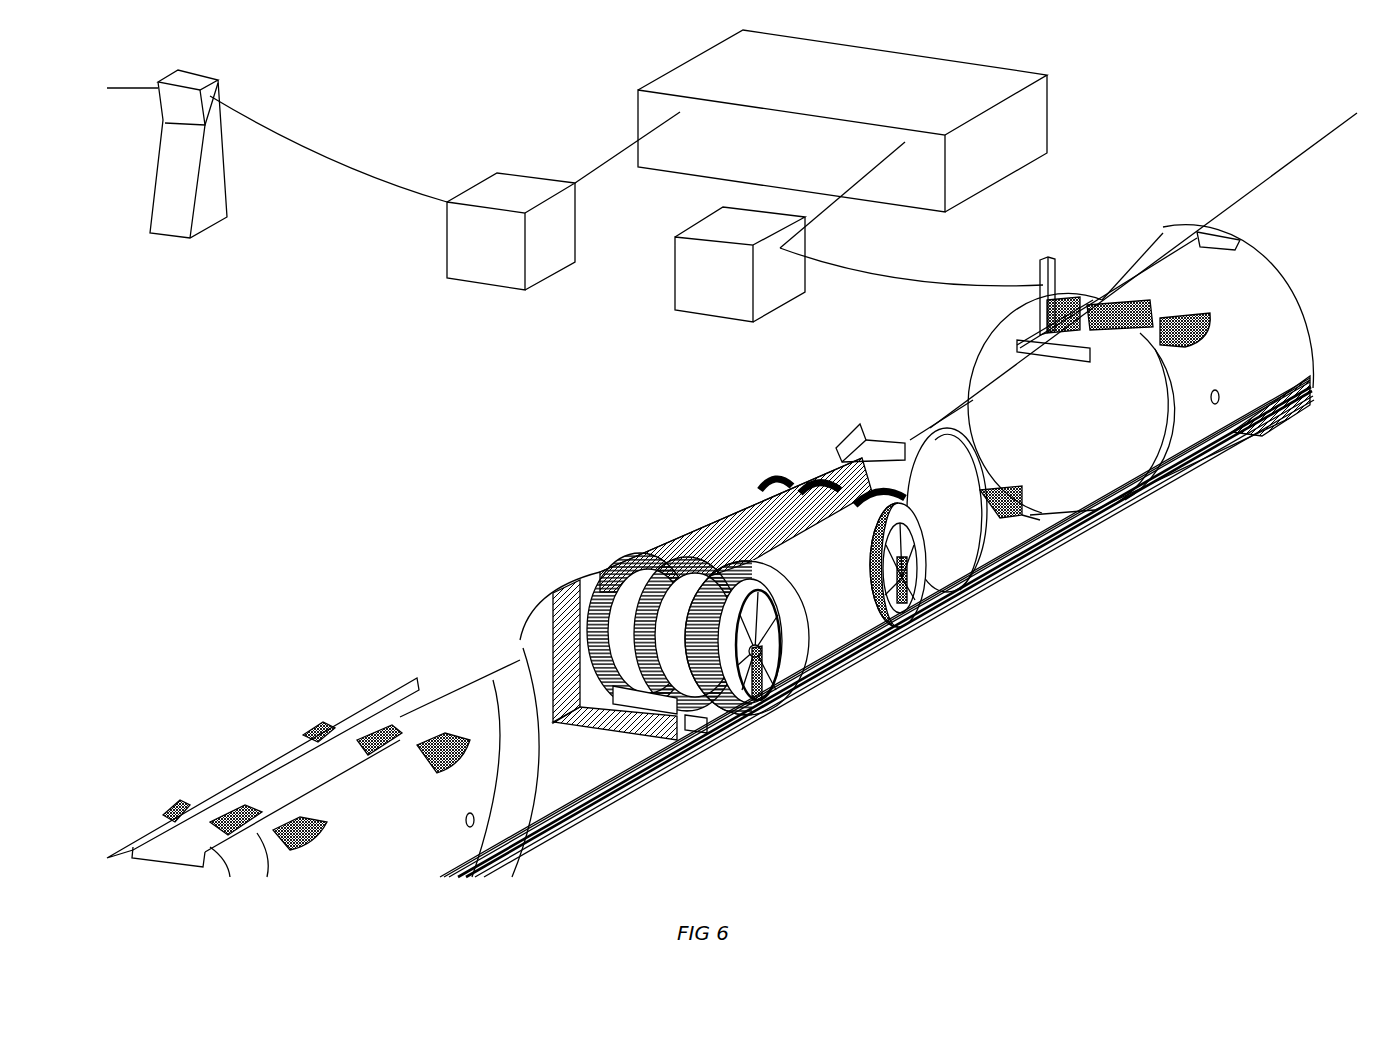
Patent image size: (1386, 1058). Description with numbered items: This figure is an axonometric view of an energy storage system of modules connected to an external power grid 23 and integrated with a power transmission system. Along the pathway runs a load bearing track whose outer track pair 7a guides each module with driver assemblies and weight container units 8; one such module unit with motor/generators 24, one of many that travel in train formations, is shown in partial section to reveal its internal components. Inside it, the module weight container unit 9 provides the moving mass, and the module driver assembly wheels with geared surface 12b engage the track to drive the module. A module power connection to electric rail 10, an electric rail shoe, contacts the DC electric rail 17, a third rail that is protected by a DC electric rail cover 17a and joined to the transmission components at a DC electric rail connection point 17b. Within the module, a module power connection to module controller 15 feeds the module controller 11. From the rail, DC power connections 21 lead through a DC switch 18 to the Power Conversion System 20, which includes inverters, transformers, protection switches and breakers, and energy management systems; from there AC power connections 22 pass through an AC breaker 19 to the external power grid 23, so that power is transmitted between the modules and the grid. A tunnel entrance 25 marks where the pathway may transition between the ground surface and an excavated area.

The load bearing track outer track pair 7a is at (547, 743).
The module with driver assemblies and weight container units 8 is at (318, 773).
The module weight container unit 9 is at (750, 527).
The module power connection to electric rail 10 is at (777, 687).
The module controller 11 is at (653, 712).
The module driver assembly wheels with geared surface 12b is at (720, 587).
The module power connection to module controller 15 is at (753, 702).
The DC electric rail 17 is at (1023, 567).
The DC electric rail cover 17a is at (1040, 540).
The DC electric rail connection point 17b is at (1048, 255).
The DC switch 18 is at (715, 277).
The AC breaker 19 is at (493, 240).
The power conversion system 20 is at (1013, 132).
The DC power connections 21 is at (890, 163).
The AC power connections 22 is at (617, 155).
The external power grid 23 is at (222, 200).
The module unit with motor/generators 24 is at (696, 559).
The tunnel entrance 25 is at (1310, 378).